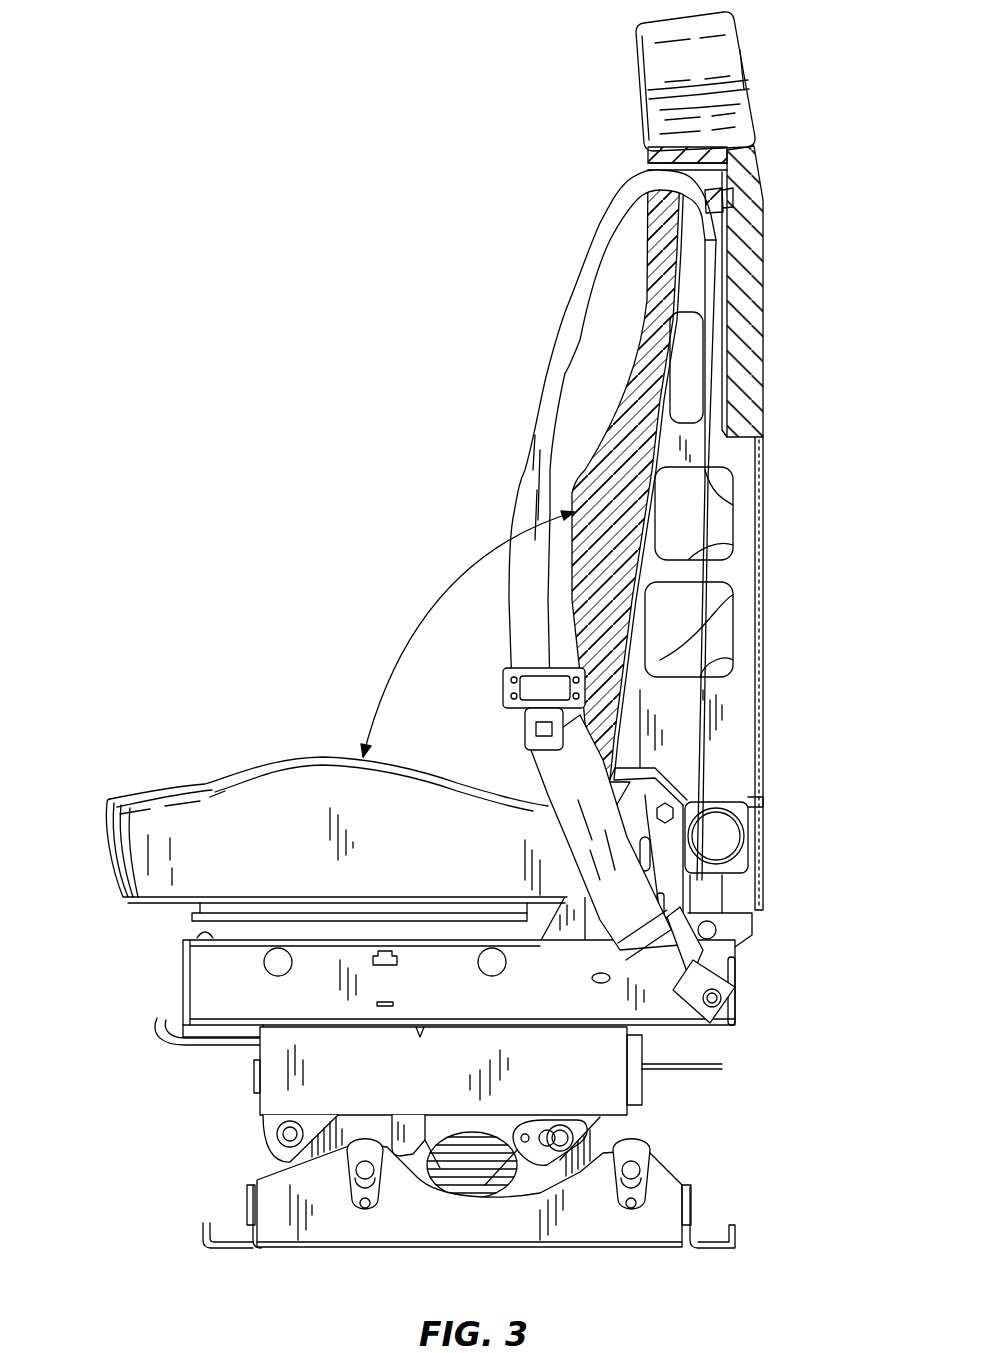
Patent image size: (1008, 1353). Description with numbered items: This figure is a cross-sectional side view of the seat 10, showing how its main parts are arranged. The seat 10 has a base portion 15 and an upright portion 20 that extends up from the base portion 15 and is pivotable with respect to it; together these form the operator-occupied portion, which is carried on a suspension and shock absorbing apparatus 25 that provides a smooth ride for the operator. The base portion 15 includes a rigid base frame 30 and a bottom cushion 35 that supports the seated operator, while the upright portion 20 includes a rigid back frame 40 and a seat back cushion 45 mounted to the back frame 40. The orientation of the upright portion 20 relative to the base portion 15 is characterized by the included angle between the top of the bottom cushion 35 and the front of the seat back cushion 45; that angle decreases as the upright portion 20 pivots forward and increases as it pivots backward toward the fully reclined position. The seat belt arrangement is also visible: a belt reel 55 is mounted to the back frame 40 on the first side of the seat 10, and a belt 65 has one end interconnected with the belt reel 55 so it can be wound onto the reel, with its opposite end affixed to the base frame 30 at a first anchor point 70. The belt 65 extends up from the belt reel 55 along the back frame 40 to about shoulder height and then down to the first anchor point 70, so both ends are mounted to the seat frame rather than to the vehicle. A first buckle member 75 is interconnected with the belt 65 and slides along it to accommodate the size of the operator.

The seat 10 is at (367, 373).
The base portion 15 is at (124, 874).
The upright portion 20 is at (648, 96).
The suspension and shock absorbing apparatus 25 is at (210, 1128).
The base frame 30 is at (205, 980).
The bottom cushion 35 is at (268, 798).
The back frame 40 is at (741, 677).
The seat back cushion 45 is at (608, 450).
The belt reel 55 is at (726, 832).
The belt 65 is at (553, 382).
The first anchor point 70 is at (722, 982).
The first buckle member 75 is at (500, 690).